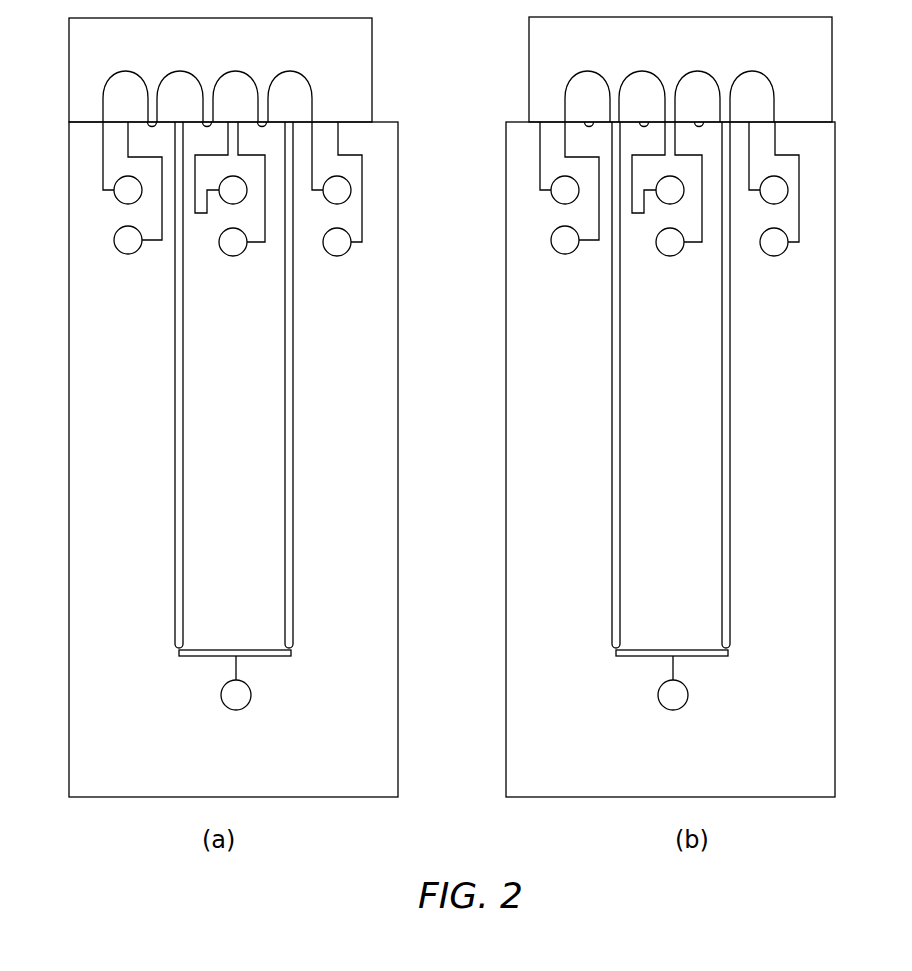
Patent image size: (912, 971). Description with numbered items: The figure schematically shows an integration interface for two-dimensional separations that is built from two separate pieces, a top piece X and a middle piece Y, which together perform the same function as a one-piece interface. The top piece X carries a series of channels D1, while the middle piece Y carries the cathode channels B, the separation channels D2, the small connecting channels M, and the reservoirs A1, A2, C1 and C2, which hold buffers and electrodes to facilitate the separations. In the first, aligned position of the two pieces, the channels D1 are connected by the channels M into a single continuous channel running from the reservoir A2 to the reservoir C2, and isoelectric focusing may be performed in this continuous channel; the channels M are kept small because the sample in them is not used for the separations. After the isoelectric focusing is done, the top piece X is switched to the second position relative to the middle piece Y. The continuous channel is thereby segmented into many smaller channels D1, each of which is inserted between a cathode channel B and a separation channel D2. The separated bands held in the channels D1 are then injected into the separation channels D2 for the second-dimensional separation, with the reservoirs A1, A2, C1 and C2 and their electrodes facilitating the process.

The top piece X is at (75, 62).
The middle piece Y is at (78, 377).
The channels D1 is at (163, 80).
The separation channels D2 is at (183, 428).
The reservoir C1 is at (123, 250).
The reservoir C2 is at (118, 194).
The cathode channels B is at (153, 242).
The channels M is at (208, 124).
The reservoir A1 is at (233, 698).
The reservoir A2 is at (337, 192).